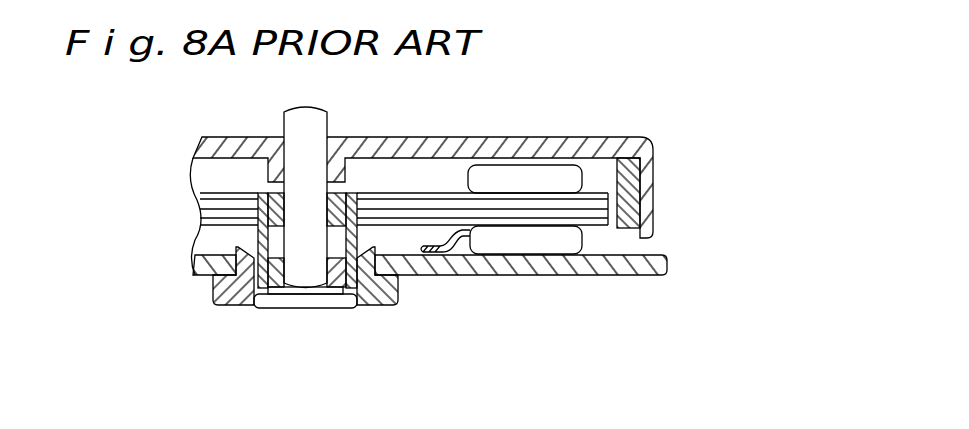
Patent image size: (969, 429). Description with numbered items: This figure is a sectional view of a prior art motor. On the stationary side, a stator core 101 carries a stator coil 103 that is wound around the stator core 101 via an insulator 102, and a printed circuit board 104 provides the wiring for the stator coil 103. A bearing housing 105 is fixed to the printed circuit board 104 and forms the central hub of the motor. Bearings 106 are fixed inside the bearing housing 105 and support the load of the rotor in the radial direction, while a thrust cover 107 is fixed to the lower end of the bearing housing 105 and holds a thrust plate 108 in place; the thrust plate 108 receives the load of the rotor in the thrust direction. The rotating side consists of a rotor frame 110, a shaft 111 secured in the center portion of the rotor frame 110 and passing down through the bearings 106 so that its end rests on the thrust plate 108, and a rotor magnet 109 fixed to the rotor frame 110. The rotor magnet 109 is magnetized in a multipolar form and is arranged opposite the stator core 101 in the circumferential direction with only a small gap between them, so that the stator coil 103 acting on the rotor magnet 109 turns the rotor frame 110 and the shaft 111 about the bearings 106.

The stator core 101 is at (595, 216).
The insulator 102 is at (547, 232).
The stator coil 103 is at (530, 174).
The printed circuit board 104 is at (495, 263).
The bearing housing 105 is at (226, 304).
The bearings 106 is at (263, 196).
The thrust cover 107 is at (302, 302).
The thrust plate 108 is at (330, 293).
The rotor magnet 109 is at (630, 192).
The rotor frame 110 is at (632, 144).
The shaft 111 is at (316, 118).